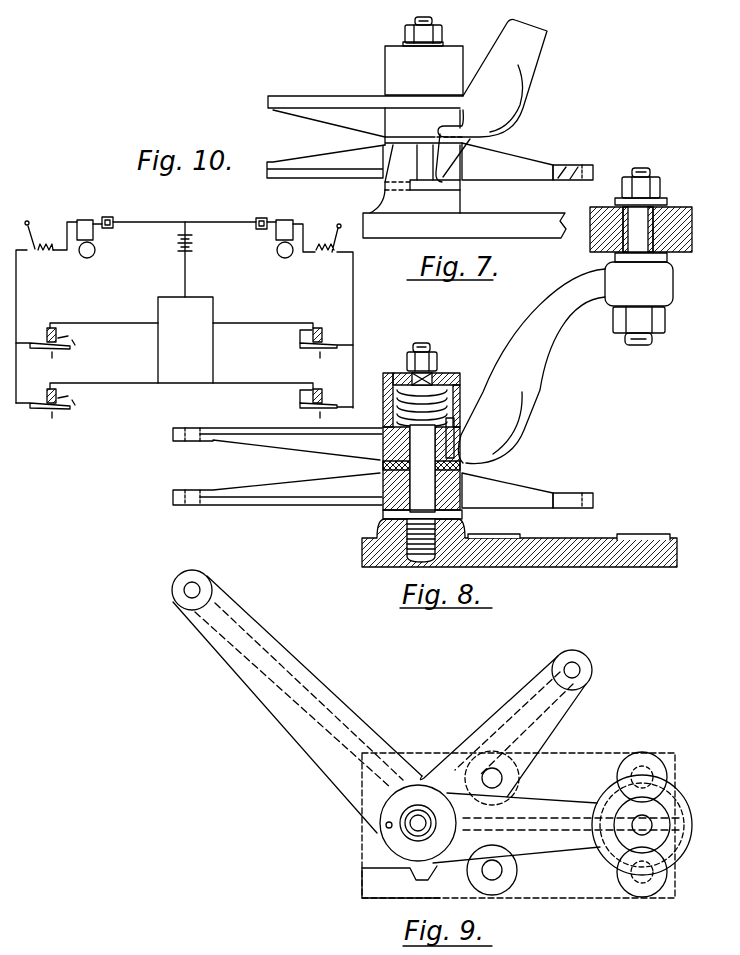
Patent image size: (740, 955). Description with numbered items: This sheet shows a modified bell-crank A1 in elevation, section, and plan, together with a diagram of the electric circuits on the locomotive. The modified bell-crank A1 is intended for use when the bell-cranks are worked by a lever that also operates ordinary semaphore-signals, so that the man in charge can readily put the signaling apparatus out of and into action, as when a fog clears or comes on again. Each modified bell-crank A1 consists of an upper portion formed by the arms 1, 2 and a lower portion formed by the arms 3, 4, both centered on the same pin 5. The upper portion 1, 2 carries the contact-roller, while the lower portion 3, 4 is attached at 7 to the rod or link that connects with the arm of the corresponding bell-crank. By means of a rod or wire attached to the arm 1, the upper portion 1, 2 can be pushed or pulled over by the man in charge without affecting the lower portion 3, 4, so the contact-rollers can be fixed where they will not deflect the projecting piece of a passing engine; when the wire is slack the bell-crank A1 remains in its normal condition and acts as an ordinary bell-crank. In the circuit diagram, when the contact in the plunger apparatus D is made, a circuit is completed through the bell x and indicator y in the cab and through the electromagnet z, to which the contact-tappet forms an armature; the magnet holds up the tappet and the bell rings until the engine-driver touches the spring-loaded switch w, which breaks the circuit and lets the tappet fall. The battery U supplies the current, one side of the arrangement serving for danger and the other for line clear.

In FIG. 7, the arm 1 is at (365, 116).
In FIG. 8, the arm 1 is at (277, 444).
In FIG. 9, the arm 1 is at (297, 701).
In FIG. 7, the upper portion arm 2 is at (491, 100).
In FIG. 8, the upper portion arm 2 is at (525, 366).
In FIG. 9, the upper portion arm 2 is at (556, 828).
In FIG. 7, the lower portion arm 3 is at (326, 161).
In FIG. 8, the lower portion arm 3 is at (277, 489).
In FIG. 7, the lower portion arm 4 is at (507, 161).
In FIG. 8, the lower portion arm 4 is at (507, 490).
In FIG. 9, the lower portion arm 4 is at (503, 726).
In FIG. 8, the pin 5 is at (422, 468).
In FIG. 7, the attachment point 7 is at (590, 167).
In FIG. 8, the attachment point 7 is at (583, 492).
In FIG. 9, the attachment point 7 is at (577, 667).
In FIG. 7, the modified bell-crank A1 is at (545, 110).
In FIG. 8, the modified bell-crank A1 is at (545, 453).
In FIG. 9, the modified bell-crank A1 is at (405, 727).
In FIG. 10, the plunger apparatus D is at (183, 338).
In FIG. 10, the battery U is at (196, 259).
In FIG. 10, the switch w is at (183, 244).
In FIG. 10, the bell x is at (282, 240).
In FIG. 10, the indicator y is at (256, 219).
In FIG. 10, the electromagnet z is at (323, 392).